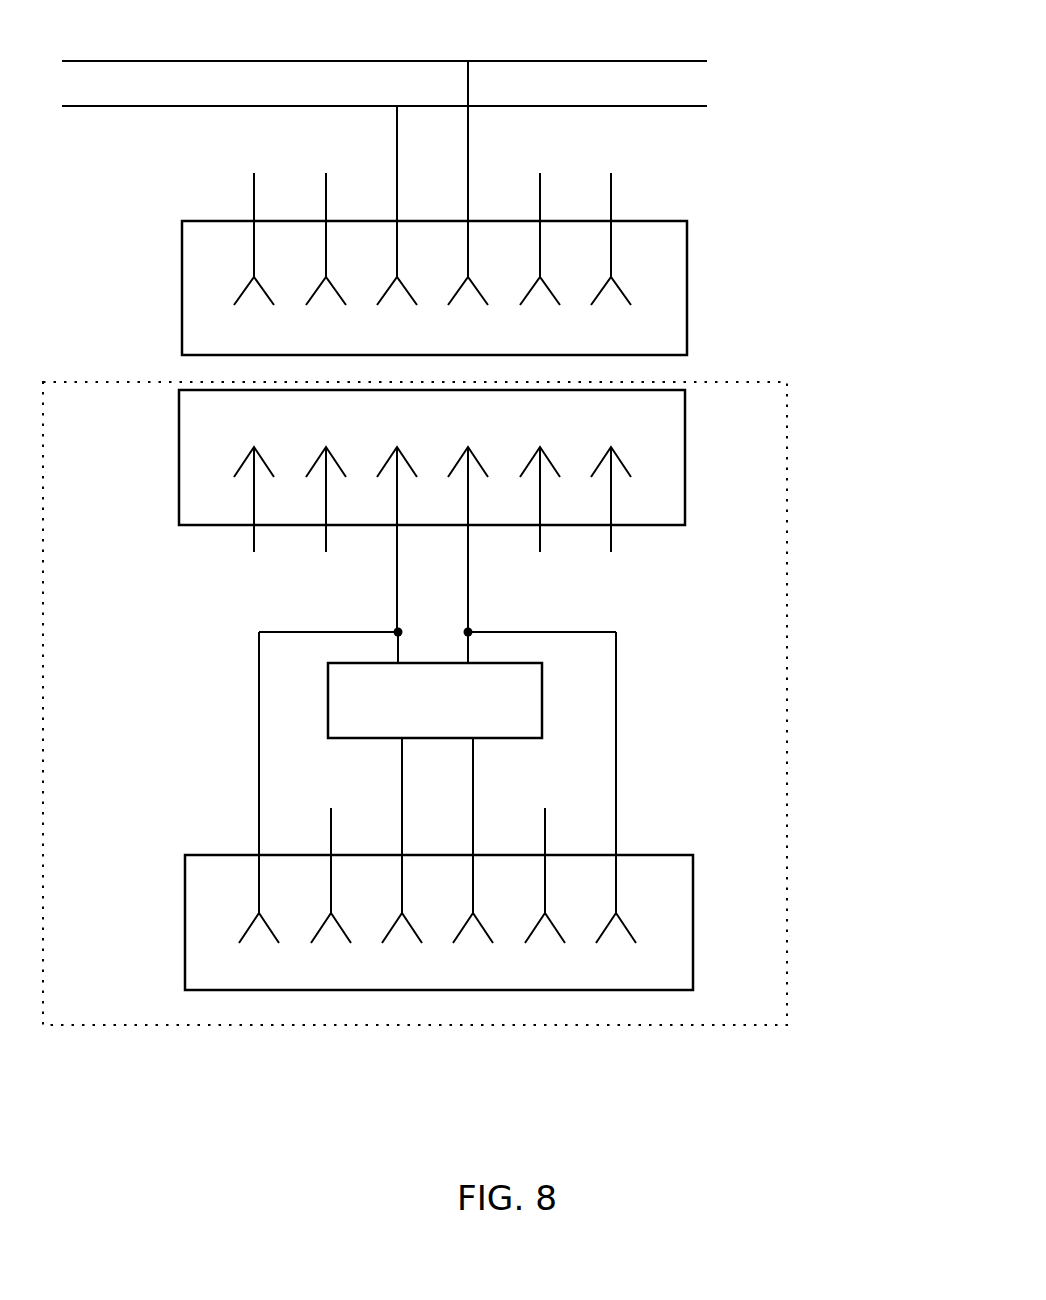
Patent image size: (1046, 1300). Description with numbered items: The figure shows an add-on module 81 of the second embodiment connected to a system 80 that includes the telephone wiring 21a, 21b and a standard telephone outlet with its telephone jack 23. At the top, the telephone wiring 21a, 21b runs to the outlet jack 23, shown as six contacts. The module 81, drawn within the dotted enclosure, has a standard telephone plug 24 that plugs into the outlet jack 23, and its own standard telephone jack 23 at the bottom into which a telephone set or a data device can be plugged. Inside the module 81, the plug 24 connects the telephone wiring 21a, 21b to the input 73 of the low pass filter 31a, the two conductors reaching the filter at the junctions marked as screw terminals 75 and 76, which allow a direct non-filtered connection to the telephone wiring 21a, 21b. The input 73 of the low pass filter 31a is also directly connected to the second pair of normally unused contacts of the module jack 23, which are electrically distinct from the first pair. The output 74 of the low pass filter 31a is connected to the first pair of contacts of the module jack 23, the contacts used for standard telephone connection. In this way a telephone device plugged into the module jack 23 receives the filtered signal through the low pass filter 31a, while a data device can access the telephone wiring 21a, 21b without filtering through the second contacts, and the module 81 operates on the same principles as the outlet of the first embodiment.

The system 80 is at (778, 82).
The telephone wiring 21a is at (640, 58).
The telephone wiring 21b is at (641, 106).
The telephone jack 23 is at (182, 288).
The telephone plug 24 is at (179, 460).
The screw terminal 75 is at (395, 628).
The screw terminal 76 is at (471, 628).
The low pass filter 31a is at (328, 702).
The input 73 is at (472, 663).
The output 74 is at (472, 738).
The module 81 is at (787, 702).